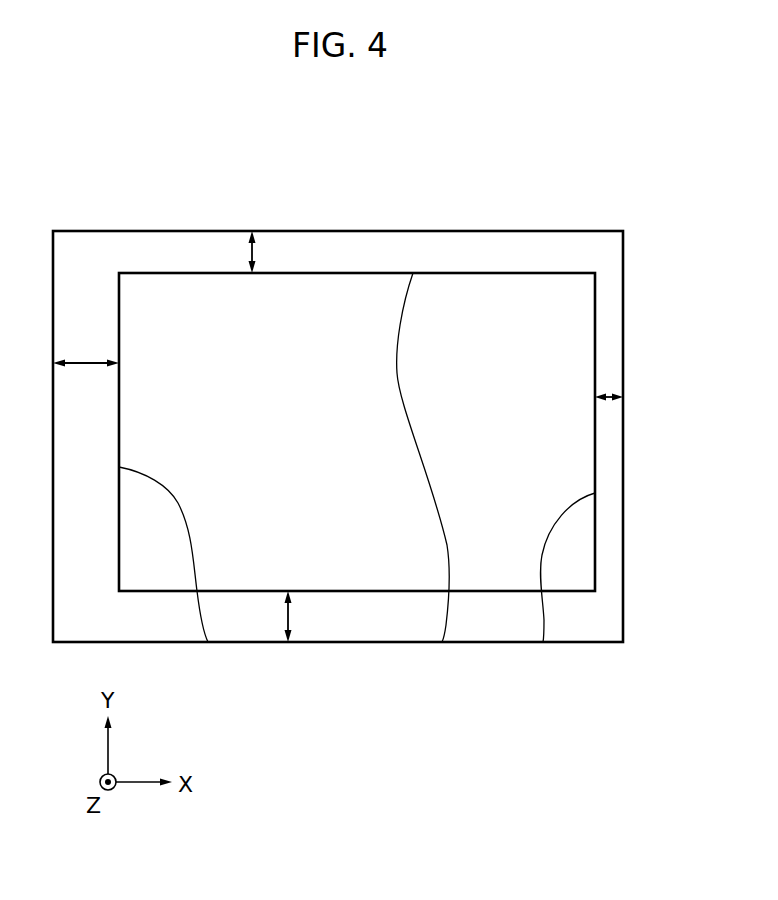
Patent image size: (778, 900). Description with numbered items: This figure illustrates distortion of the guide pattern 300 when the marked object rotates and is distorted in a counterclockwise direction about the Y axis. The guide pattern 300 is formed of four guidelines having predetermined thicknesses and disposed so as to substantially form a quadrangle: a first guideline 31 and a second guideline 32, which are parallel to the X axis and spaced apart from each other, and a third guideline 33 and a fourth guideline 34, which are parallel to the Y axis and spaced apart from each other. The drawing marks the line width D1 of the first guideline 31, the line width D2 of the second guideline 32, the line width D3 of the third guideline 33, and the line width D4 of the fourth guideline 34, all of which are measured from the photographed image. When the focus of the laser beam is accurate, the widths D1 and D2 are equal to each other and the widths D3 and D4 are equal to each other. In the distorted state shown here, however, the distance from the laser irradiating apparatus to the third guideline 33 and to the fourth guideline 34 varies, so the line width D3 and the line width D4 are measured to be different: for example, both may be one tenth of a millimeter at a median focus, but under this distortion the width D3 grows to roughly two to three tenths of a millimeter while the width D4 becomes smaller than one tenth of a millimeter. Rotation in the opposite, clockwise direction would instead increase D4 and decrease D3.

The guide pattern 300 is at (513, 712).
The first guideline 31 is at (340, 642).
The second guideline 32 is at (442, 642).
The third guideline 33 is at (208, 642).
The fourth guideline 34 is at (543, 642).
The line width of the first guideline D1 is at (269, 252).
The line width of the second guideline D2 is at (305, 616).
The line width of the third guideline D3 is at (86, 347).
The line width of the fourth guideline D4 is at (608, 391).